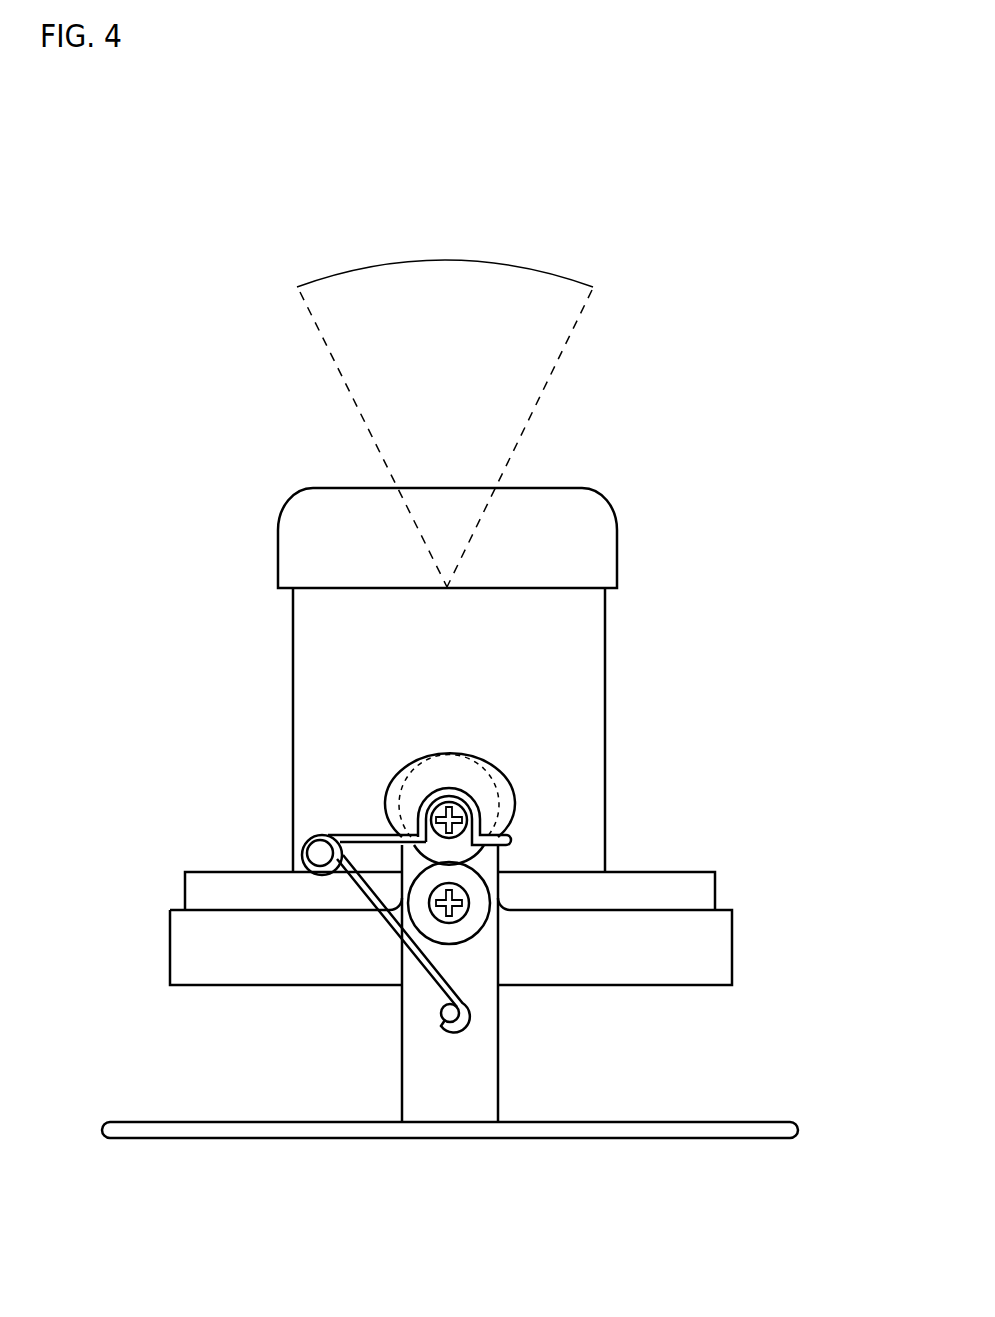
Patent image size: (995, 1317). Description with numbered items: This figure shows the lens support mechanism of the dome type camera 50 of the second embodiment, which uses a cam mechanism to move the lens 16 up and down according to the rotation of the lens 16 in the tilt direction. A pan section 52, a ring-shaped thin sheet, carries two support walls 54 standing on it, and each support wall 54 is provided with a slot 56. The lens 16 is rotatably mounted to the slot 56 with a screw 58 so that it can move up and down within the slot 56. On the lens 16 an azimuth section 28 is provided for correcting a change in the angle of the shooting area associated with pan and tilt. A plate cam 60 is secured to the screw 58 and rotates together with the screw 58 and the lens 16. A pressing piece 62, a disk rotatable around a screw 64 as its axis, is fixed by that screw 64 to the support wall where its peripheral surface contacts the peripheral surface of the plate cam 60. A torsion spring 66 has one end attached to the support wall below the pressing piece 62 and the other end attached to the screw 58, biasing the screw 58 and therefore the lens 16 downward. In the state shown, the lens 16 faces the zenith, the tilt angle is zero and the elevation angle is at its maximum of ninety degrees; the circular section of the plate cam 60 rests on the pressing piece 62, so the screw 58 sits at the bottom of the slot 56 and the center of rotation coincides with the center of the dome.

The lens 16 is at (590, 609).
The azimuth section 28 is at (185, 887).
The dome type camera 50 is at (526, 549).
The pan section 52 is at (640, 1140).
The support wall 54 is at (413, 1055).
The slot 56 is at (447, 780).
The screw 58 is at (456, 812).
The plate cam 60 is at (513, 800).
The pressing piece 62 is at (458, 915).
The screw 64 is at (475, 890).
The torsion spring 66 is at (372, 835).